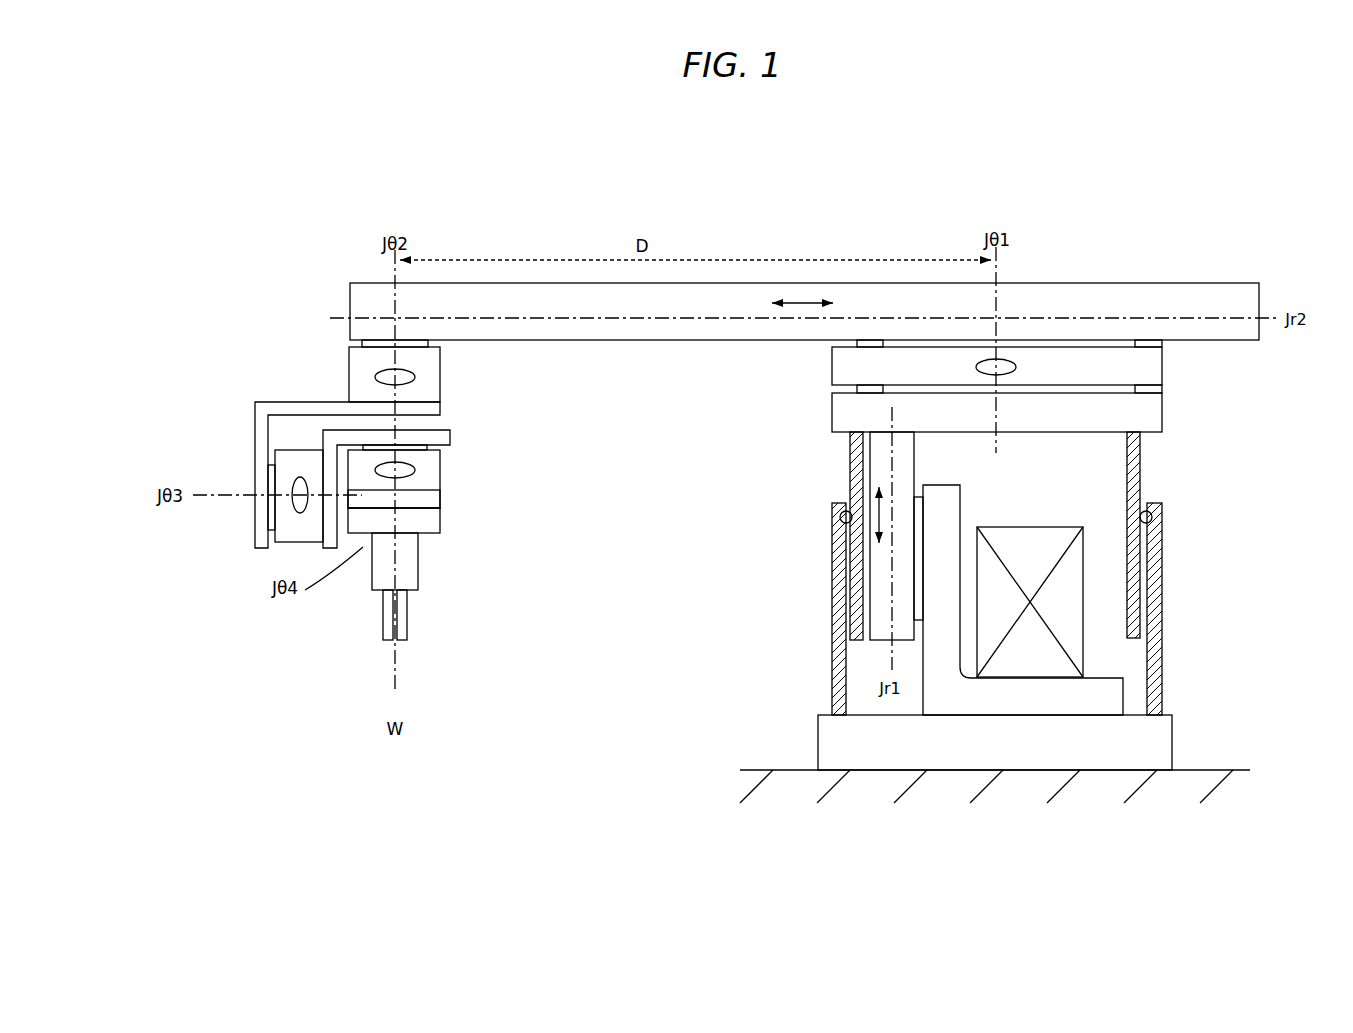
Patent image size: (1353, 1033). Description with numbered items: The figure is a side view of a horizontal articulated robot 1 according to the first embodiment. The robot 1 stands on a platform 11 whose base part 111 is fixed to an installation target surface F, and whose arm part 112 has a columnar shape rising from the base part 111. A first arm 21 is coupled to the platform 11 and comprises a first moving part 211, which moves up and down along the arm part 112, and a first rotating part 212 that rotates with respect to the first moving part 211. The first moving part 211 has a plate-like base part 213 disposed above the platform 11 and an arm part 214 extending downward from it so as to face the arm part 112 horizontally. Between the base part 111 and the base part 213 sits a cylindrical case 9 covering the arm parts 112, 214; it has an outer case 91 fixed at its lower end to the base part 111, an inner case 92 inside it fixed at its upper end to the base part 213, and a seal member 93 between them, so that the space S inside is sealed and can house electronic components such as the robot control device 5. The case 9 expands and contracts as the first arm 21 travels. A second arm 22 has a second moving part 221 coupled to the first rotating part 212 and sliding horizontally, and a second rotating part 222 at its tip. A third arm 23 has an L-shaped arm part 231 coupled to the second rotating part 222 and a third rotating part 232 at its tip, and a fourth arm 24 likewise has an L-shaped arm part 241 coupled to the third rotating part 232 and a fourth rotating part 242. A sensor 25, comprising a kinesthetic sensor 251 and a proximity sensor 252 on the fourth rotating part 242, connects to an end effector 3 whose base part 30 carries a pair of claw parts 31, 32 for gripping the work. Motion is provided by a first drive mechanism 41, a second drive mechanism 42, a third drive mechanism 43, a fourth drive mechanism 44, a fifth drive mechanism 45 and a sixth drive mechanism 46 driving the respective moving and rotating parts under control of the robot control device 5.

The robot 1 is at (1213, 188).
The platform 11 is at (1176, 740).
The base part 111 is at (1070, 742).
The arm part 112 is at (968, 697).
The first arm 21 is at (1167, 412).
The first moving part 211 is at (750, 397).
The first rotating part 212 is at (883, 362).
The base part 213 is at (845, 413).
The arm part 214 is at (855, 455).
The second arm 22 is at (678, 281).
The second moving part 221 is at (568, 300).
The second rotating part 222 is at (372, 350).
The third arm 23 is at (253, 425).
The arm part 231 is at (312, 410).
The third rotating part 232 is at (290, 535).
The fourth arm 24 is at (447, 462).
The arm part 241 is at (343, 440).
The fourth rotating part 242 is at (423, 482).
The sensor 25 is at (535, 500).
The kinesthetic sensor 251 is at (428, 523).
The proximity sensor 252 is at (441, 495).
The end effector 3 is at (421, 577).
The base part 30 is at (380, 568).
The claw part 31 is at (385, 630).
The claw part 32 is at (405, 630).
The first drive mechanism 41 is at (912, 557).
The second drive mechanism 42 is at (1085, 380).
The third drive mechanism 43 is at (930, 340).
The fourth drive mechanism 44 is at (410, 340).
The fifth drive mechanism 45 is at (266, 515).
The sixth drive mechanism 46 is at (420, 445).
The robot control device 5 is at (1075, 595).
The case 9 is at (1165, 552).
The outer case 91 is at (1152, 682).
The inner case 92 is at (1135, 625).
The seal member 93 is at (1152, 517).
The space S is at (1090, 467).
The installation target surface F is at (772, 770).